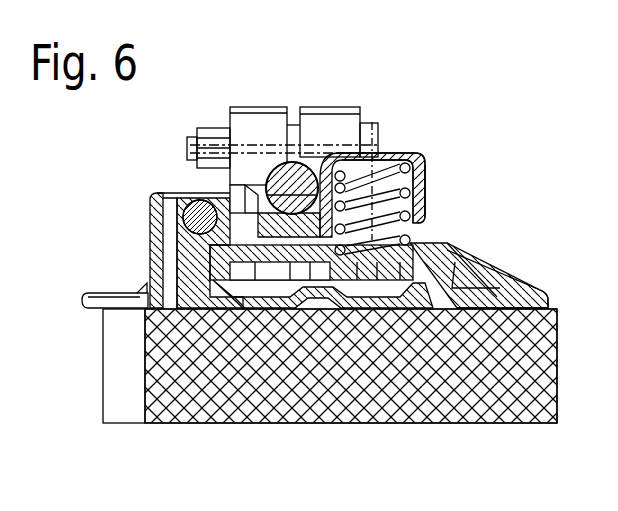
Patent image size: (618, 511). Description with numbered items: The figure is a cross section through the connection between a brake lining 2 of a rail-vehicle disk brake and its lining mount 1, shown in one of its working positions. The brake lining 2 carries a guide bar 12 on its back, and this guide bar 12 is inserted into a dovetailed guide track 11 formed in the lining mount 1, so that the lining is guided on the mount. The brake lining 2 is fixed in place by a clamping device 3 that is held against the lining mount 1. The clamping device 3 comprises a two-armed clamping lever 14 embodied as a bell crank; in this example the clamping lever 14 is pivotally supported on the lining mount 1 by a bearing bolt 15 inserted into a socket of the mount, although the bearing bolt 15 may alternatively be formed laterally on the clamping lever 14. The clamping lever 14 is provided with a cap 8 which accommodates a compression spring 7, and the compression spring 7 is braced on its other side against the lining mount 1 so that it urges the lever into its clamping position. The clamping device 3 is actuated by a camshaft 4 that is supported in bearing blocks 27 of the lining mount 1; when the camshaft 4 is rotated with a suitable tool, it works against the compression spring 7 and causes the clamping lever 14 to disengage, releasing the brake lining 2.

The lining mount 1 is at (455, 297).
The brake lining 2 is at (152, 438).
The clamping device 3 is at (443, 186).
The camshaft 4 is at (275, 174).
The compression spring 7 is at (400, 243).
The cap 8 is at (407, 160).
The dovetailed guide track 11 is at (260, 288).
The guide bar 12 is at (388, 305).
The clamping lever 14 is at (217, 200).
The bearing bolt 15 is at (186, 228).
The bearing block 27 is at (318, 112).